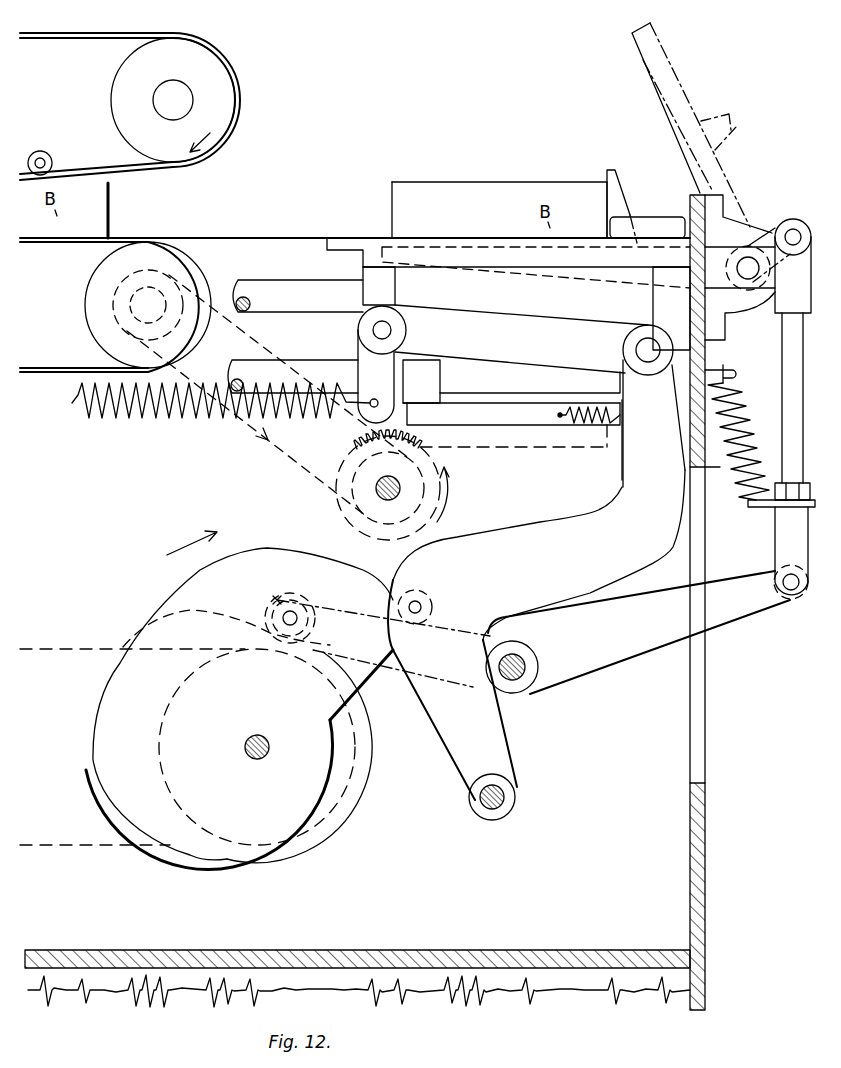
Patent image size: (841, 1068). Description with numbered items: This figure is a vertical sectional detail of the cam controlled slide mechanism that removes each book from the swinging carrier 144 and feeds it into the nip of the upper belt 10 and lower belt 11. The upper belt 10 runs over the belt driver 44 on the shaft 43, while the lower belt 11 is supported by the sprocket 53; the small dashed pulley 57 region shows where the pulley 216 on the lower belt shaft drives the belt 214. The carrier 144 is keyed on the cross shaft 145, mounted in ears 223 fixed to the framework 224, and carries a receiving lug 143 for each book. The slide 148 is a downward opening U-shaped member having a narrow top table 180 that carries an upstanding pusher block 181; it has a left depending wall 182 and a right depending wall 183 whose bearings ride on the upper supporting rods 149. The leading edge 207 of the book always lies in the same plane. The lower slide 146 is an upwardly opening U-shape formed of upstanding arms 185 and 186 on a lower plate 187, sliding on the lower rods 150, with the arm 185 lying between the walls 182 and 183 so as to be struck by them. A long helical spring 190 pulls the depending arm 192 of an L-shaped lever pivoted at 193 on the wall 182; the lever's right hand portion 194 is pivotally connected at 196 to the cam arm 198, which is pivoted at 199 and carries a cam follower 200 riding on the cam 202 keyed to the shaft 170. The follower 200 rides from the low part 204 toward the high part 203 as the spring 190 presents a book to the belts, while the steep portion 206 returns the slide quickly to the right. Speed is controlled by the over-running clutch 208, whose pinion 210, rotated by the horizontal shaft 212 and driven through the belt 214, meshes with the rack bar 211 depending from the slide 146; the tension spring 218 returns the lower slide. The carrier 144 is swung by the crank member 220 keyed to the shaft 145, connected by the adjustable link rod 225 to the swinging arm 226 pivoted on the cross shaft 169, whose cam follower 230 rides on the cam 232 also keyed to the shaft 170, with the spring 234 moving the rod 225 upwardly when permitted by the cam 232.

The upper endless conveyor belt 10 is at (81, 36).
The belt driver 44 is at (125, 78).
The shaft 43 is at (173, 100).
The lower endless conveyor belt 11 is at (80, 238).
The sprocket 53 is at (103, 262).
The pulley 57 is at (154, 312).
The helical spring 190 is at (104, 416).
The pulley 216 is at (212, 322).
The belt 214 is at (262, 446).
The upper supporting rod 149 is at (272, 280).
The slide 148 is at (363, 265).
The top table 180 is at (345, 240).
The leading edge 207 is at (390, 198).
The carrier 144 is at (478, 246).
The depending wall 182 is at (374, 298).
The pivot 193 is at (392, 330).
The depending arm 192 is at (384, 390).
The lower supporting rod 150 is at (318, 366).
The upstanding arm 185 is at (426, 391).
The lower plate 187 is at (470, 397).
The right hand portion 194 is at (598, 346).
The pivotal connection 196 is at (640, 350).
The upstanding arm 186 is at (682, 374).
The helical tension spring 218 is at (622, 420).
The depending wall 183 is at (674, 313).
The slide 146 is at (520, 415).
The rack bar 211 is at (466, 447).
The pinion 210 is at (352, 445).
The over-running clutch 208 is at (392, 488).
The horizontal shaft 212 is at (387, 500).
The receiving lug 143 is at (618, 175).
The pusher block 181 is at (645, 217).
The ear 223 is at (742, 208).
The crank member 220 is at (778, 227).
The cross shaft 145 is at (740, 270).
The link rod 225 is at (784, 404).
The spring 234 is at (752, 438).
The framework 224 is at (710, 462).
The cam arm 198 is at (640, 522).
The cam 202 is at (412, 572).
The pivot 199 is at (506, 798).
The cross shaft 169 is at (522, 680).
The swinging arm 226 is at (641, 648).
The cam follower 200 is at (428, 609).
The high part 203 is at (372, 610).
The cam follower 230 is at (278, 604).
The shaft 170 is at (245, 748).
The low part 204 is at (326, 746).
The steep portion 206 is at (368, 680).
The cam 232 is at (373, 768).